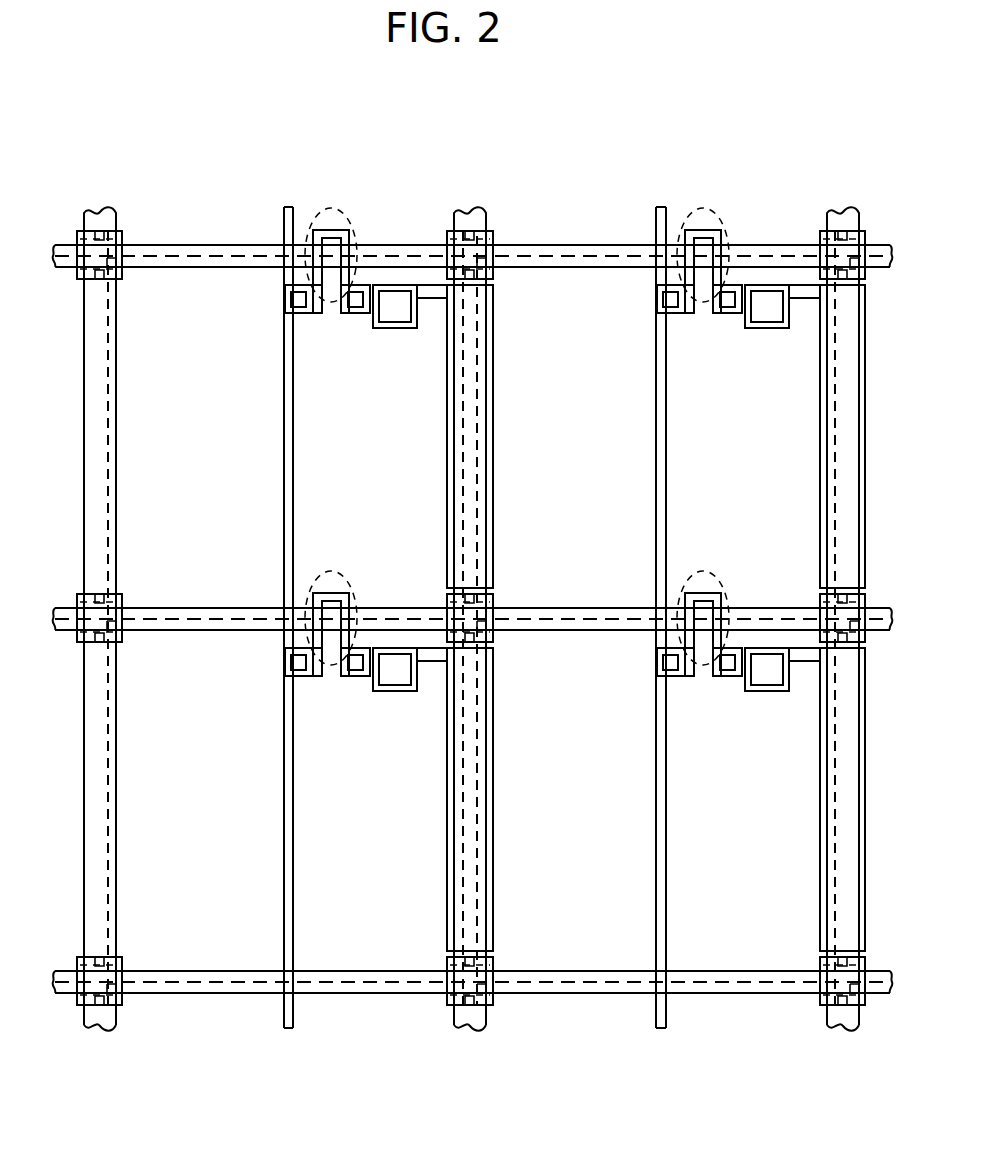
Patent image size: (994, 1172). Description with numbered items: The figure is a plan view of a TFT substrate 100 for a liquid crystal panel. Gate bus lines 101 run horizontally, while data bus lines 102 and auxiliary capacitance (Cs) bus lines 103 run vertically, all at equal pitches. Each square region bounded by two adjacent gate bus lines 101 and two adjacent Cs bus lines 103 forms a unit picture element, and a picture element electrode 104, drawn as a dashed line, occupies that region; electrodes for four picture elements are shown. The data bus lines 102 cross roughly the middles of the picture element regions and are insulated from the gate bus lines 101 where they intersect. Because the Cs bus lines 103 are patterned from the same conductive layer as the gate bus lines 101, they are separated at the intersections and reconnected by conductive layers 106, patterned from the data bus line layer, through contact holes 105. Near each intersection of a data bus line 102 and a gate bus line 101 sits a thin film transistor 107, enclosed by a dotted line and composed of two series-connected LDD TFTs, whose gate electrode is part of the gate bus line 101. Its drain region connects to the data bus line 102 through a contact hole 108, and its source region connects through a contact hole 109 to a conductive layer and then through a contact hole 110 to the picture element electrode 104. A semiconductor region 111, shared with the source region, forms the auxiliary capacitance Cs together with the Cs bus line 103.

The TFT substrate 100 is at (112, 164).
The gate bus line 101 is at (152, 245).
The data bus line 102 is at (290, 472).
The auxiliary capacitance (Cs) bus line 103 is at (88, 405).
The picture element electrode 104 is at (225, 252).
The contact hole 105 is at (472, 234).
The conductive layer 106 is at (492, 240).
The thin film transistor 107 is at (347, 215).
The contact hole 108 is at (288, 308).
The contact hole 109 is at (358, 306).
The contact hole 110 is at (400, 317).
The semiconductor region 111 is at (447, 450).